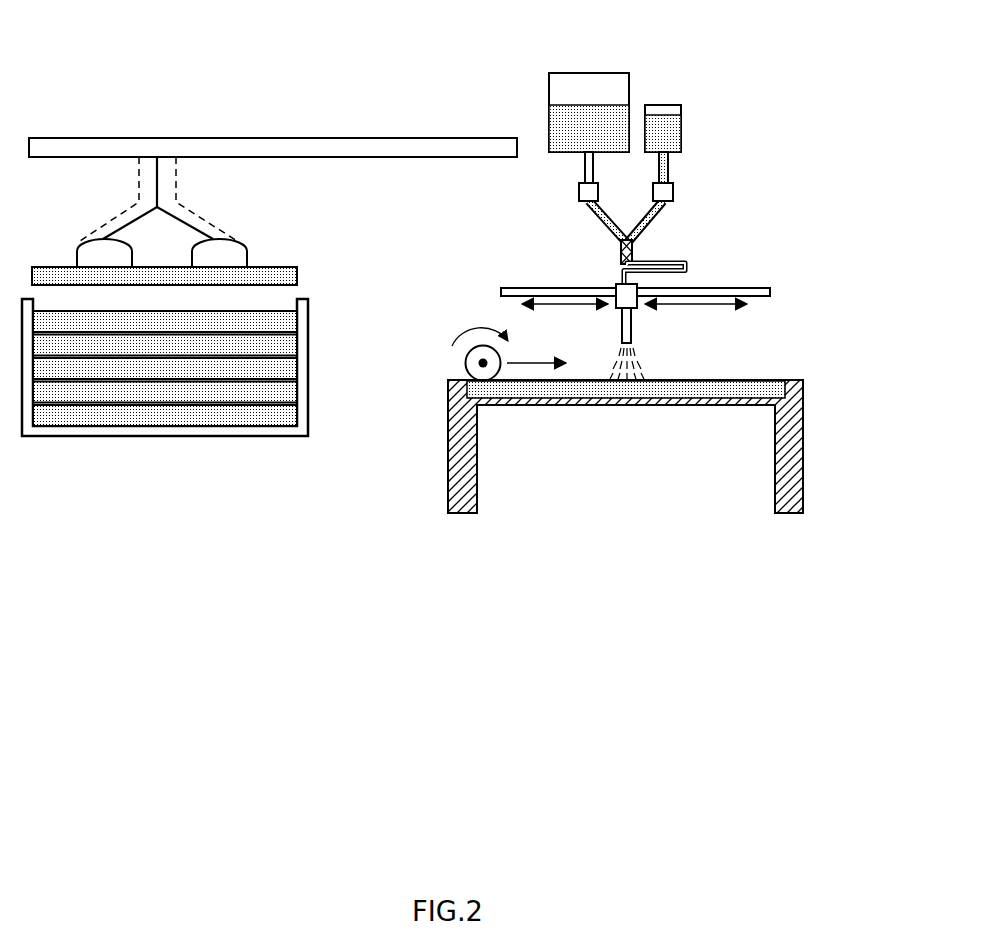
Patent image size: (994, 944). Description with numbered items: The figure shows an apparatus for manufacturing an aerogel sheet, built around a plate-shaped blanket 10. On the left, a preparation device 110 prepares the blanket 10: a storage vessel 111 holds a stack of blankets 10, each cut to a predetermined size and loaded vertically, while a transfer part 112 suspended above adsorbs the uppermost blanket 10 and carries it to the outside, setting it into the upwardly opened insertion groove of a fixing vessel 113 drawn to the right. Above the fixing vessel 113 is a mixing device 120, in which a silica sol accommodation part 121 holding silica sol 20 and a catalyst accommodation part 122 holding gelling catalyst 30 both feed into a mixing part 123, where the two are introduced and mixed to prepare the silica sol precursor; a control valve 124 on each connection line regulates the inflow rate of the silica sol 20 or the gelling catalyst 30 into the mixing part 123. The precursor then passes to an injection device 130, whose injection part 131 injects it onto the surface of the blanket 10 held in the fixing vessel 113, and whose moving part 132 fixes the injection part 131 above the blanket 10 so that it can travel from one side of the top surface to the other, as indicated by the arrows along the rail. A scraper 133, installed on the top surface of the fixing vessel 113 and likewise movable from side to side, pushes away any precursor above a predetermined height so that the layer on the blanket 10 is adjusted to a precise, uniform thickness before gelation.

The blanket 10 is at (297, 275).
The silica sol 20 is at (558, 117).
The gelling catalyst 30 is at (675, 132).
The preparation device 110 is at (412, 342).
The storage vessel 111 is at (163, 437).
The transfer part 112 is at (218, 258).
The fixing vessel 113 is at (448, 437).
The mixing device 120 is at (648, 145).
The silica sol accommodation part 121 is at (579, 84).
The catalyst accommodation part 122 is at (689, 101).
The mixing part 123 is at (709, 197).
The control valve 124 is at (653, 198).
The injection device 130 is at (709, 329).
The injection part 131 is at (631, 327).
The moving part 132 is at (770, 291).
The scraper 133 is at (493, 360).